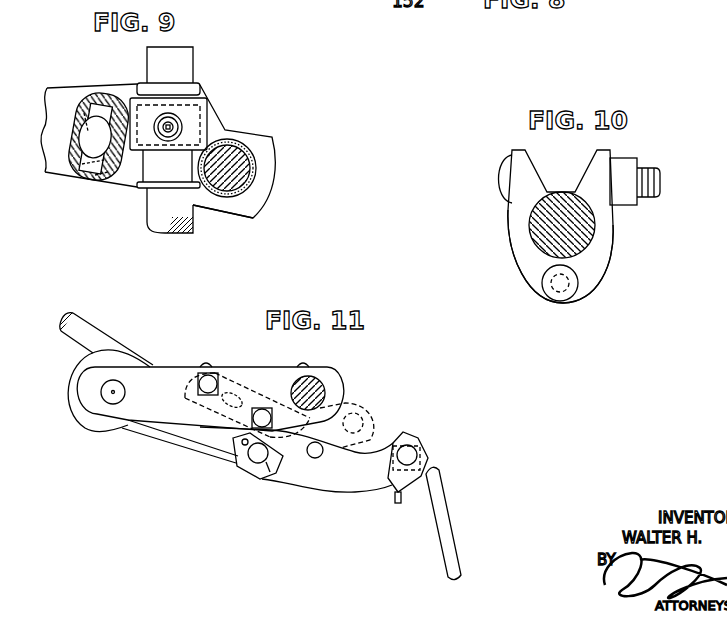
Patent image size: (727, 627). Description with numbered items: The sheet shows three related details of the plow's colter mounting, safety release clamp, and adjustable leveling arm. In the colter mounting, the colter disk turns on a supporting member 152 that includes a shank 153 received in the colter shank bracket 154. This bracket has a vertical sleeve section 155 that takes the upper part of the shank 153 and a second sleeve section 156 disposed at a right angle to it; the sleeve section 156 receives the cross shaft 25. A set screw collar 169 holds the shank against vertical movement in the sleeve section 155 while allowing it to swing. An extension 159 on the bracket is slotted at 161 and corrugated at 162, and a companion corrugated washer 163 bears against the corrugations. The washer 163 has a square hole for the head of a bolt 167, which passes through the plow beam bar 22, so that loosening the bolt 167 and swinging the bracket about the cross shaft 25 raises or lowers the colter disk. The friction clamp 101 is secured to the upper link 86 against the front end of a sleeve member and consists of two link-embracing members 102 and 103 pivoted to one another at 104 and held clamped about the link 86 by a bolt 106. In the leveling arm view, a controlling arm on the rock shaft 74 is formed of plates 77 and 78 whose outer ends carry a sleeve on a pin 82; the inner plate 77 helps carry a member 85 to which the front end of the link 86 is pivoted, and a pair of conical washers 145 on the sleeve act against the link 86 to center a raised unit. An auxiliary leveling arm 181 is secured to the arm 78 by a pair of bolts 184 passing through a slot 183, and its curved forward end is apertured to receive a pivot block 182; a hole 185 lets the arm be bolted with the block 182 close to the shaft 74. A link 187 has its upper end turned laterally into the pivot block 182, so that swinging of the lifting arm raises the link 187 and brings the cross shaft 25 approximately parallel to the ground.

In FIG. 9, the plow beam bar 22 is at (55, 100).
In FIG. 9, the cross shaft 25 is at (235, 168).
In FIG. 9, the supporting member 152 is at (150, 208).
In FIG. 9, the colter shank 153 is at (175, 58).
In FIG. 9, the colter shank bracket 154 is at (223, 109).
In FIG. 9, the vertical sleeve section 155 is at (140, 160).
In FIG. 9, the second sleeve section 156 is at (233, 197).
In FIG. 9, the extension 159 is at (120, 97).
In FIG. 9, the slot 161 is at (105, 100).
In FIG. 9, the corrugations 162 is at (87, 177).
In FIG. 9, the corrugated washer 163 is at (103, 185).
In FIG. 9, the bolt 167 is at (87, 127).
In FIG. 9, the set screw collar 169 is at (177, 103).
In FIG. 10, the friction clamp 101 is at (504, 235).
In FIG. 10, the link-embracing member 102 is at (523, 263).
In FIG. 10, the link-embracing member 103 is at (598, 252).
In FIG. 10, the pivot 104 is at (572, 288).
In FIG. 10, the bolt 106 is at (503, 183).
In FIG. 10, the link 86 is at (577, 222).
In FIG. 11, the link 86 is at (100, 340).
In FIG. 11, the rock shaft 74 is at (325, 390).
In FIG. 11, the plate 77 is at (170, 437).
In FIG. 11, the plate 78 is at (162, 380).
In FIG. 11, the pin 82 is at (125, 400).
In FIG. 11, the member 85 is at (248, 467).
In FIG. 11, the conical washers 145 is at (105, 428).
In FIG. 11, the auxiliary arm 181 is at (343, 478).
In FIG. 11, the pivot block 182 is at (413, 490).
In FIG. 11, the slot 183 is at (288, 457).
In FIG. 11, the bolts 184 is at (262, 410).
In FIG. 11, the hole 185 is at (315, 458).
In FIG. 11, the link 187 is at (445, 535).